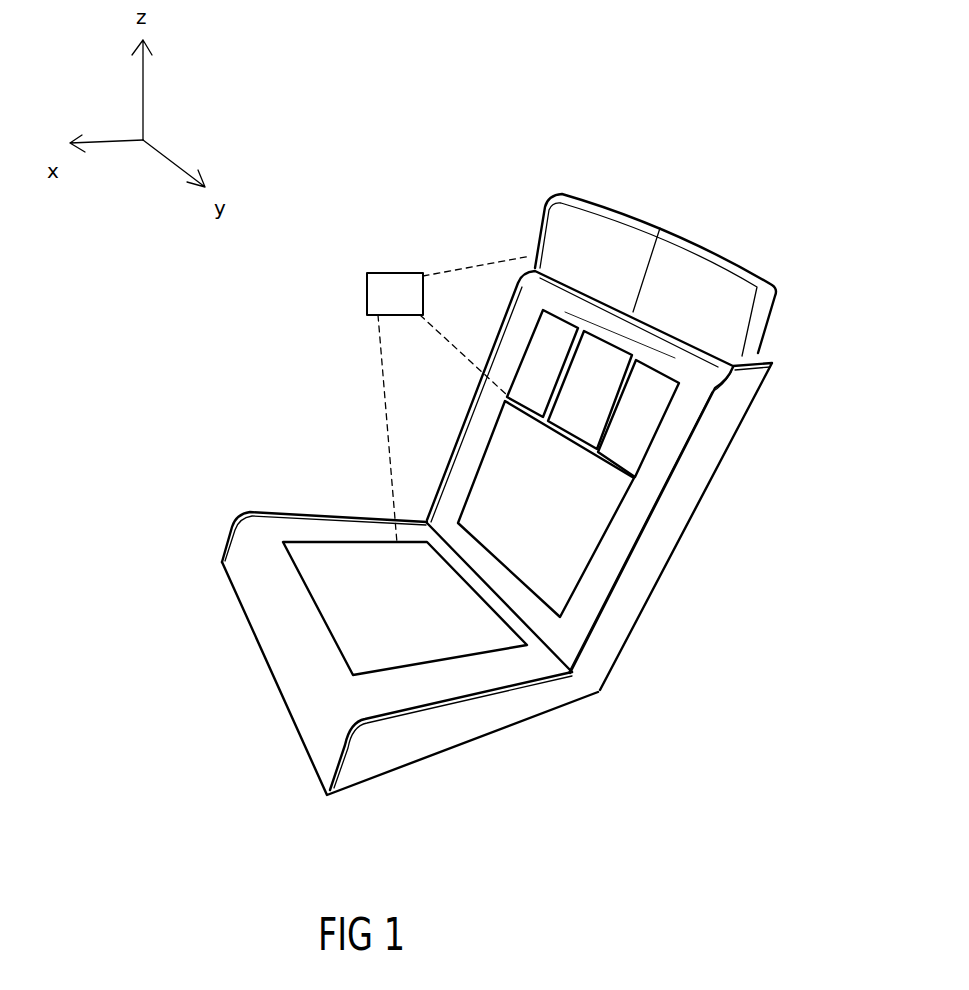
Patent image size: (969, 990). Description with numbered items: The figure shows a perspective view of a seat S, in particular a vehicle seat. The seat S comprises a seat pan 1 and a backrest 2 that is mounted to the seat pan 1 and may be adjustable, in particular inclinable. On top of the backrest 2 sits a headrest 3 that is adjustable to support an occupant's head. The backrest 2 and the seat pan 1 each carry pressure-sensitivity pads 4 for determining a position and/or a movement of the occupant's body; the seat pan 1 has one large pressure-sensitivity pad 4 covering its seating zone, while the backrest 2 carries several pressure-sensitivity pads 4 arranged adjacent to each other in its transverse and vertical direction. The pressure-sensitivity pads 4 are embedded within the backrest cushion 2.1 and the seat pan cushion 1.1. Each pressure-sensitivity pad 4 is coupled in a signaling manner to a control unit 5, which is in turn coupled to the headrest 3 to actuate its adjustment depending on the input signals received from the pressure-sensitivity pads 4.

The seat S is at (755, 132).
The seat pan 1 is at (305, 473).
The seat pan cushion 1.1 is at (312, 655).
The backrest 2 is at (760, 492).
The backrest cushion 2.1 is at (650, 483).
The headrest 3 is at (795, 260).
The pressure-sensitivity pad 4 is at (348, 585).
The control unit 5 is at (403, 305).